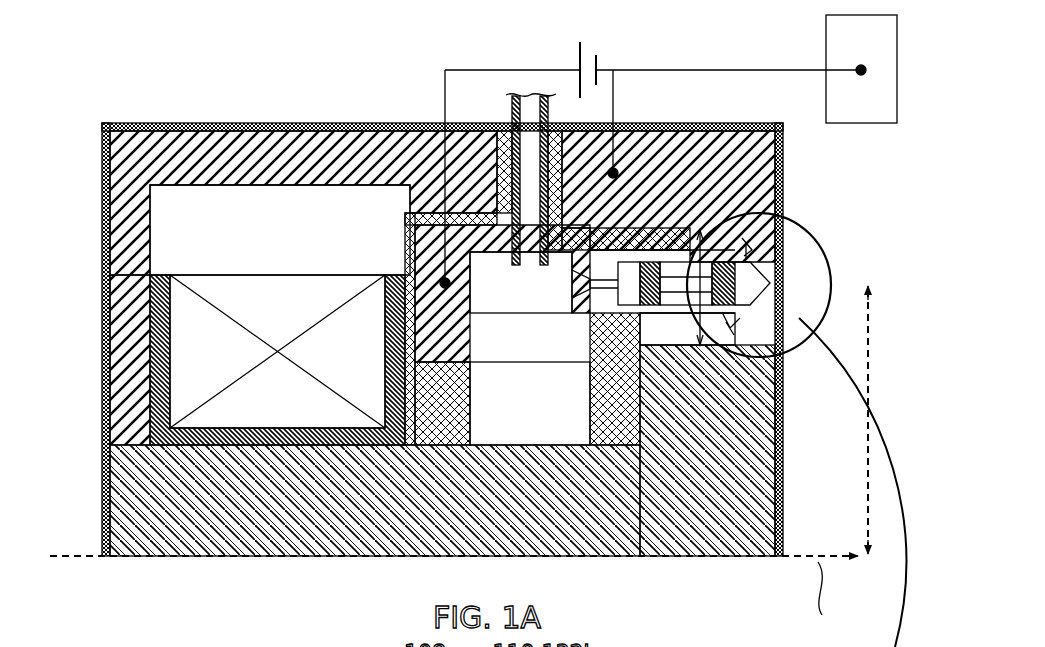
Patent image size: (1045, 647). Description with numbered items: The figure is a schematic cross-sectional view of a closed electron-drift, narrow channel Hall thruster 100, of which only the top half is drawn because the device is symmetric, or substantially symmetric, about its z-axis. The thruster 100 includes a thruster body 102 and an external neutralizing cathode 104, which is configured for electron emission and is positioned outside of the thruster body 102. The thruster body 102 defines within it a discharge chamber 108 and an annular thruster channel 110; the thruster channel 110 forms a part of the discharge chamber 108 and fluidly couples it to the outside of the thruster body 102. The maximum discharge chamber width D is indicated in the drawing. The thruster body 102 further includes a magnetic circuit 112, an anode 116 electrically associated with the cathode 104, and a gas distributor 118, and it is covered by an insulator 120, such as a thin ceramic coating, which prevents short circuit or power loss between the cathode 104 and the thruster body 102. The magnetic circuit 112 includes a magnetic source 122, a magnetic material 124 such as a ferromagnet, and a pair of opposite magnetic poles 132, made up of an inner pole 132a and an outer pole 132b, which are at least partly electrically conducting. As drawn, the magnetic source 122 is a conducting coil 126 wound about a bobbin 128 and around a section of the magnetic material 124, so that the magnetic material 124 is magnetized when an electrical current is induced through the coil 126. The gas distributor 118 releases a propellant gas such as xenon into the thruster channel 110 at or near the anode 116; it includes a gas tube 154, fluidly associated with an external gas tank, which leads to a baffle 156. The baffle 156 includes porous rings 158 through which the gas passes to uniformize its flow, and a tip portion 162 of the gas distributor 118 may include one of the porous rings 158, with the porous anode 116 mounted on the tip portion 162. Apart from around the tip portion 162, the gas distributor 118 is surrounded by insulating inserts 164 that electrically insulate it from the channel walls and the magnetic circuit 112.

The narrow channel Hall thruster 100 is at (87, 43).
The thruster body 102 is at (358, 66).
The cathode 104 is at (826, 35).
The discharge chamber 108 is at (770, 127).
The thruster channel 110 is at (790, 283).
The magnetic circuit 112 is at (176, 246).
The anode 116 is at (778, 432).
The gas distributor 118 is at (524, 382).
The insulator 120 is at (228, 118).
The magnetic source 122 is at (284, 270).
The magnetic material 124 is at (334, 168).
The conducting coil 126 is at (265, 450).
The bobbin 128 is at (150, 405).
The magnetic poles 132 is at (591, 37).
The inner pole 132a is at (723, 325).
The outer pole 132b is at (762, 258).
The gas tube 154 is at (512, 100).
The baffle 156 is at (486, 352).
The porous rings 158 is at (703, 345).
The tip portion 162 is at (730, 228).
The inserts 164 is at (428, 212).
The maximum discharge chamber width D is at (700, 228).